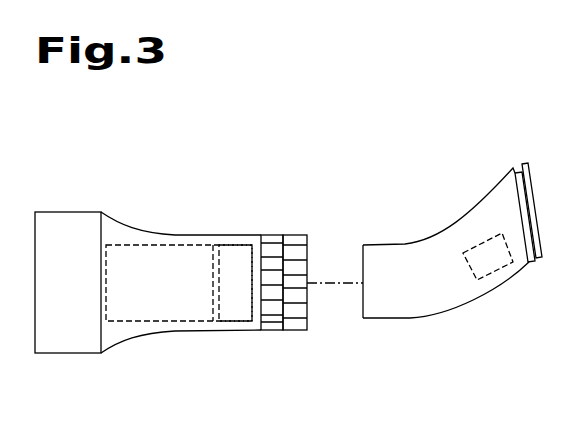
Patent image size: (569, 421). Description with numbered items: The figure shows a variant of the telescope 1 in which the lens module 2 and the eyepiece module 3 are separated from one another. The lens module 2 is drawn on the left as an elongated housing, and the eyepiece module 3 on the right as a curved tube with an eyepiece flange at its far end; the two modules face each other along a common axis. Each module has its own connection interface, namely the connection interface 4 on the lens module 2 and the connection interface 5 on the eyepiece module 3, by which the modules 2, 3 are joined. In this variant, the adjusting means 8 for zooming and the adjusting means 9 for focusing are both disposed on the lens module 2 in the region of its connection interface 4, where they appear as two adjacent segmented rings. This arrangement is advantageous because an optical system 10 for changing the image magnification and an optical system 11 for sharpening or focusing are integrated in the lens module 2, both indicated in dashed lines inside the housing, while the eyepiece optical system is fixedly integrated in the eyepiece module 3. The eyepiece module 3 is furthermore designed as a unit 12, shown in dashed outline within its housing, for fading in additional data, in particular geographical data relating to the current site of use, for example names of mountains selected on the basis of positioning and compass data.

The telescope 1 is at (309, 105).
The lens module 2 is at (127, 233).
The eyepiece module 3 is at (480, 228).
The connection interface 4 is at (312, 310).
The connection interface 5 is at (357, 248).
The adjusting means 8 is at (270, 238).
The adjusting means 9 is at (292, 238).
The optical system for changing the image magnification 10 is at (153, 268).
The optical system for sharpening or focusing 11 is at (237, 268).
The unit for fading in additional data 12 is at (490, 265).